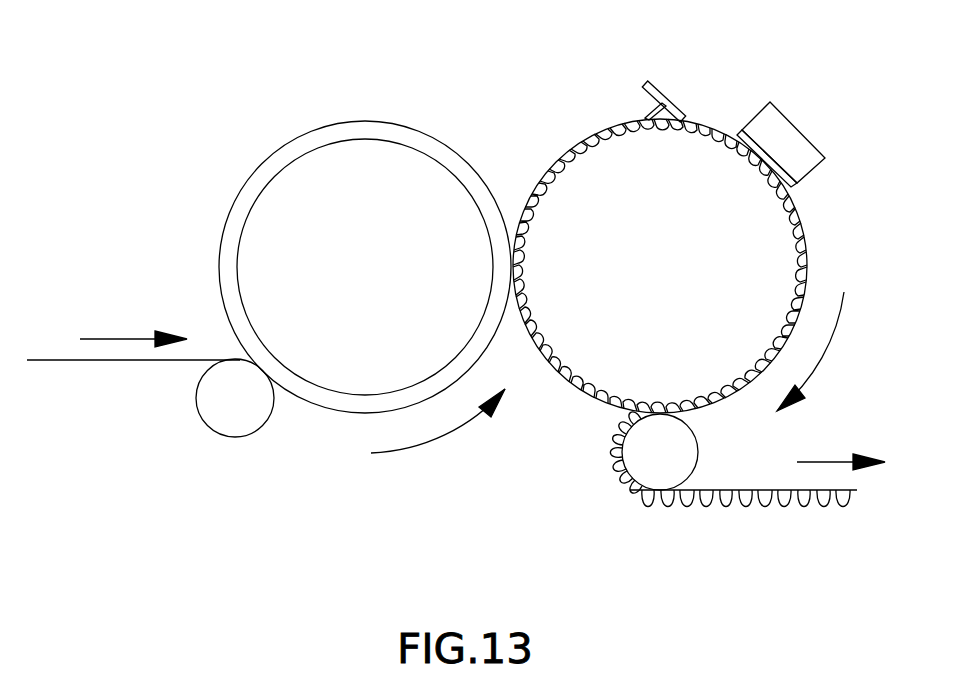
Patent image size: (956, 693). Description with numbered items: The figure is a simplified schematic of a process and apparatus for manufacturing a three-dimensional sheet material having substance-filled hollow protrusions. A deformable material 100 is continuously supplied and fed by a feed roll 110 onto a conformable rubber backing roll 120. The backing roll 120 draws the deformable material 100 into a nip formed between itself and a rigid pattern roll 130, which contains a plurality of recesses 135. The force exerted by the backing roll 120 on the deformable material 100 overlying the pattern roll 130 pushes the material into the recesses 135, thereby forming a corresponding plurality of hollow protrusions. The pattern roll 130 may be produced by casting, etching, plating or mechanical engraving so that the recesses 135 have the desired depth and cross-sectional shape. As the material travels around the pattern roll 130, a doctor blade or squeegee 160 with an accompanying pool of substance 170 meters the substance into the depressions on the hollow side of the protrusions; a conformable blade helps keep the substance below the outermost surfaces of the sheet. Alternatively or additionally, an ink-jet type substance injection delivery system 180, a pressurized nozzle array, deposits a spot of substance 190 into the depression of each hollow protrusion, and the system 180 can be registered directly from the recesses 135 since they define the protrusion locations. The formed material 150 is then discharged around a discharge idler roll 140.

The deformable material 100 is at (127, 360).
The feed roll 110 is at (239, 408).
The conformable rubber backing roll 120 is at (387, 286).
The rigid pattern roll 130 is at (679, 286).
The recesses 135 is at (542, 181).
The discharge idler roll 140 is at (660, 458).
The formed material 150 is at (735, 492).
The doctor blade or squeegee 160 is at (668, 108).
The pool of substance 170 is at (646, 108).
The substance injection delivery system 180 is at (783, 131).
The spot of substance 190 is at (788, 182).